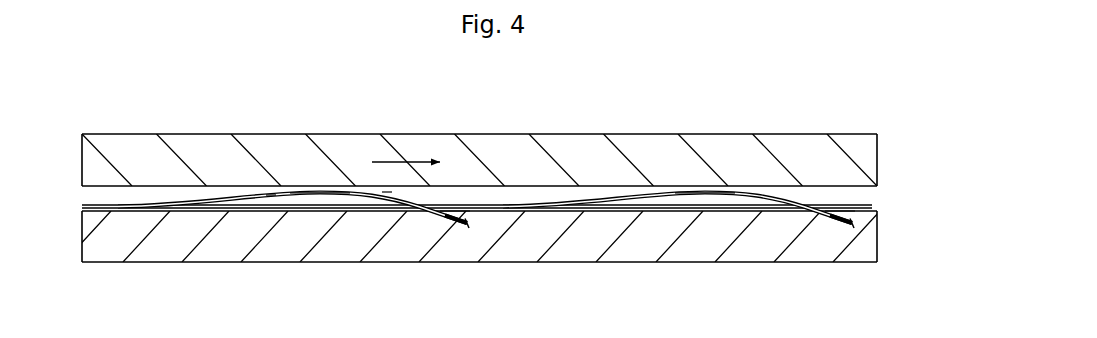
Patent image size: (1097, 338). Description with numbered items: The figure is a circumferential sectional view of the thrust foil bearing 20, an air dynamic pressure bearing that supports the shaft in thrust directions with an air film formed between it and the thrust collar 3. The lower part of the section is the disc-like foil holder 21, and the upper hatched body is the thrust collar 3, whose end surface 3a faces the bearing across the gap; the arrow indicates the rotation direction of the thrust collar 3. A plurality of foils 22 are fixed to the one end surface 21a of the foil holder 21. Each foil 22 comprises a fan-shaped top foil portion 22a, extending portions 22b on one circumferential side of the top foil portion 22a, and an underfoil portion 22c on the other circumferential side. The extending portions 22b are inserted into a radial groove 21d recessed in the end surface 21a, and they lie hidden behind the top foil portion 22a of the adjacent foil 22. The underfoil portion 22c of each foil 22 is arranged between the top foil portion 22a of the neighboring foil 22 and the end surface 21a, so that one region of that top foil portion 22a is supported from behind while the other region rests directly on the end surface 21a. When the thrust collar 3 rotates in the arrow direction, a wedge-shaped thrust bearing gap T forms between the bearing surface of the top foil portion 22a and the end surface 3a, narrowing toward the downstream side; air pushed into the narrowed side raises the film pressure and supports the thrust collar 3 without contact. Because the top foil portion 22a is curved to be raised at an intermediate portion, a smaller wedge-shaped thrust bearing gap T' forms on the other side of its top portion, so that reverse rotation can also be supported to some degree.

The thrust collar 3 is at (782, 148).
The end surface of the thrust collar 3a is at (525, 182).
The thrust foil bearing 20 is at (160, 265).
The foil holder 21 is at (636, 247).
The end surface of the foil holder 21a is at (863, 208).
The radial groove 21d is at (455, 210).
The foil 22 is at (240, 198).
The top foil portion 22a is at (345, 191).
The extending portion 22b is at (456, 221).
The underfoil portion 22c is at (277, 209).
The thrust bearing gap T is at (268, 142).
The thrust bearing gap for reverse rotation T' is at (387, 250).